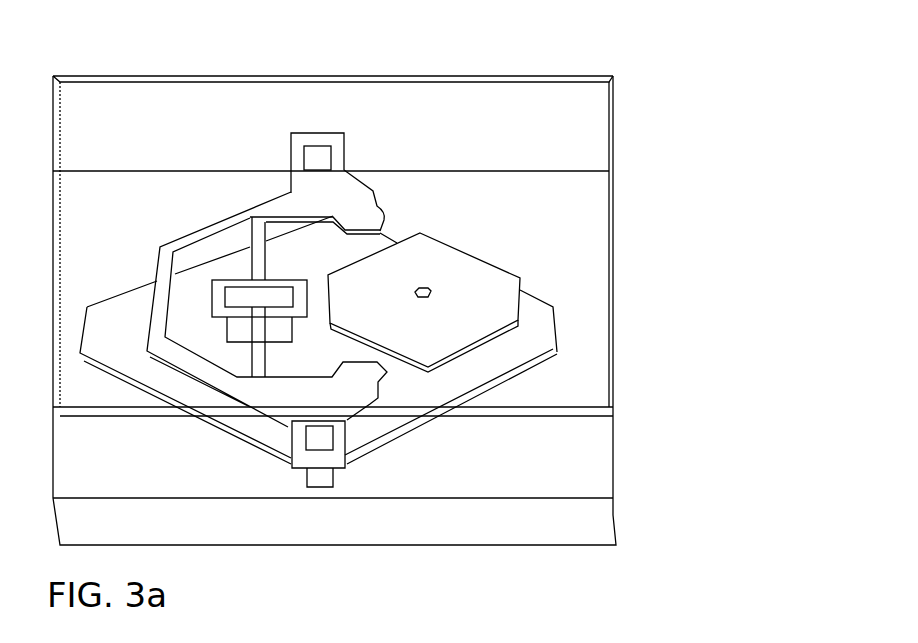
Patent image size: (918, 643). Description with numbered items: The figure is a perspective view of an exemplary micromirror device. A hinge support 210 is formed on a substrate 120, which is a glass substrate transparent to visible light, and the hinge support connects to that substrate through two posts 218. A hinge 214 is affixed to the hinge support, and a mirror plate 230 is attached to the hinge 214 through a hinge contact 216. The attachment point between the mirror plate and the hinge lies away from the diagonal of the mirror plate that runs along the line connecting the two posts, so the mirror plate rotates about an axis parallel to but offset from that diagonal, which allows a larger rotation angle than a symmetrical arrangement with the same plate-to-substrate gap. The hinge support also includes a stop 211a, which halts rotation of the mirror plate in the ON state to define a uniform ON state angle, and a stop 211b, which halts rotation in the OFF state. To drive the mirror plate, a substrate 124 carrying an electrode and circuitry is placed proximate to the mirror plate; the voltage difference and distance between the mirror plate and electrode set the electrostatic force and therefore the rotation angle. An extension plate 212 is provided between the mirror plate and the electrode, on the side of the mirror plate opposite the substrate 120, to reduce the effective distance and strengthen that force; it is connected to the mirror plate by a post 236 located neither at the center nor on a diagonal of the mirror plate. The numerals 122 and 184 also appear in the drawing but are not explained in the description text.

The sensor assembly 122 is at (447, 44).
The substrate 124 is at (270, 77).
The substrate 120 is at (206, 170).
The hinge support 210 is at (349, 121).
The posts 218 is at (317, 157).
The stop 211a is at (383, 223).
The stop 211b is at (153, 318).
The extension plate 212 is at (458, 266).
The post 236 is at (418, 291).
The hinge 214 is at (250, 258).
The hinge contact 216 is at (227, 332).
The mirror plate 230 is at (398, 430).
The lead 184 is at (666, 638).